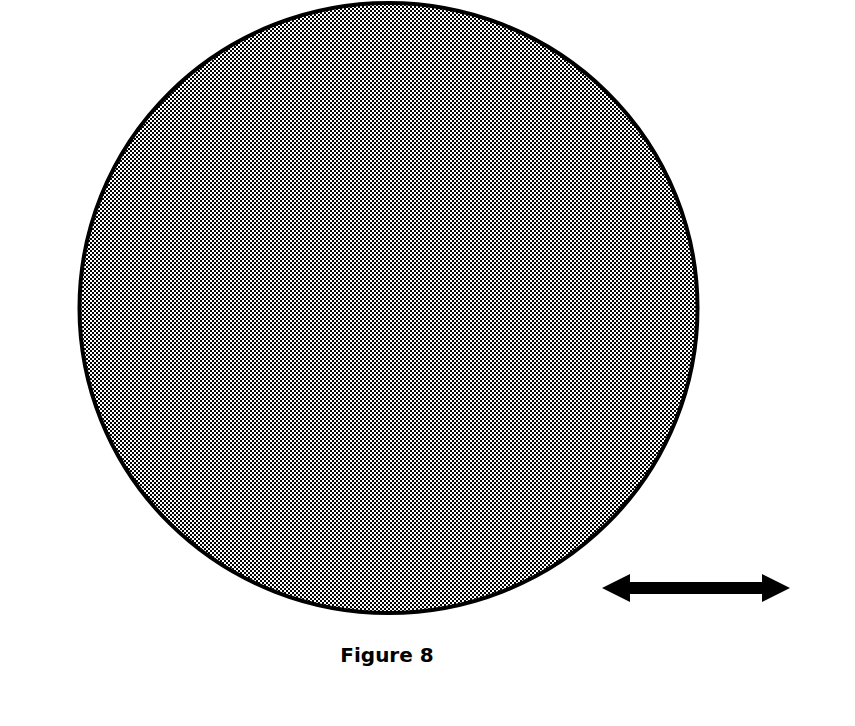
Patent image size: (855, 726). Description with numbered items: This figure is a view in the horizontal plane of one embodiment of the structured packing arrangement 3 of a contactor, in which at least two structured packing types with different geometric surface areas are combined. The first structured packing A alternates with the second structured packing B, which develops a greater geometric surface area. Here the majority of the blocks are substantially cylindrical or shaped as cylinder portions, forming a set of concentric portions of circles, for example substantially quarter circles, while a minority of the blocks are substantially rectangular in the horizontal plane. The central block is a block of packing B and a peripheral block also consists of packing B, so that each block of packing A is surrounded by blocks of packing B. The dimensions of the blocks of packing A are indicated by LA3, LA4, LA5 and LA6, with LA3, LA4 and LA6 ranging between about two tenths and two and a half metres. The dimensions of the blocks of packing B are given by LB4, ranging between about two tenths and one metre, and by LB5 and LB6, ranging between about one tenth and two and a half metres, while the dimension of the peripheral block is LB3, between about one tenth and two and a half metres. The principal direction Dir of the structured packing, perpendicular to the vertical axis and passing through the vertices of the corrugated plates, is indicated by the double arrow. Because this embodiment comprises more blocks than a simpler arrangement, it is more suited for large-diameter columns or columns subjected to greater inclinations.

The structured packing arrangement 3 is at (658, 362).
The first structured packing A is at (193, 137).
The second structured packing B is at (146, 494).
The dimension of block of packing A LA3 is at (297, 348).
The dimension of block of packing A LA4 is at (176, 212).
The height dimension LA5 of zone segment LA5 is at (362, 86).
The dimension of block of packing A LA6 is at (165, 281).
The dimension of peripheral block LB3 is at (186, 506).
The dimension of block of packing B LB4 is at (437, 377).
The dimension of block of packing B LB5 is at (227, 263).
The dimension of block of packing B LB6 is at (478, 286).
The principal direction Dir is at (696, 568).